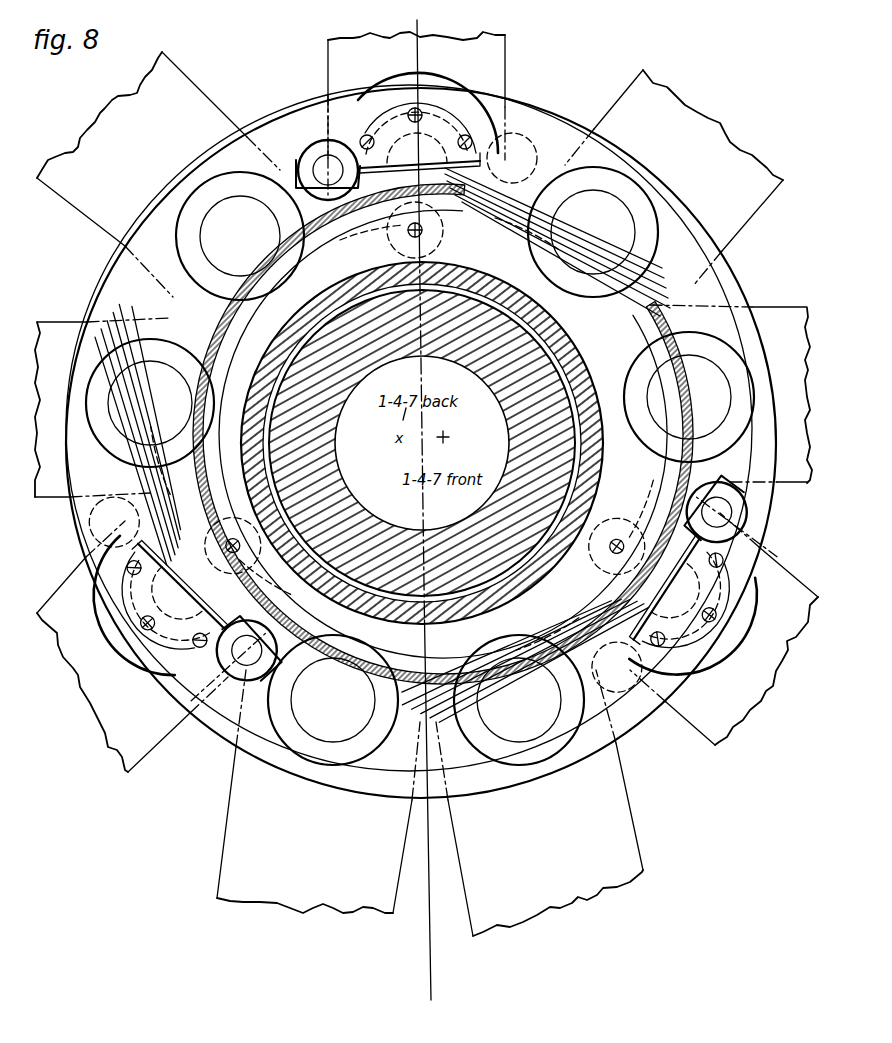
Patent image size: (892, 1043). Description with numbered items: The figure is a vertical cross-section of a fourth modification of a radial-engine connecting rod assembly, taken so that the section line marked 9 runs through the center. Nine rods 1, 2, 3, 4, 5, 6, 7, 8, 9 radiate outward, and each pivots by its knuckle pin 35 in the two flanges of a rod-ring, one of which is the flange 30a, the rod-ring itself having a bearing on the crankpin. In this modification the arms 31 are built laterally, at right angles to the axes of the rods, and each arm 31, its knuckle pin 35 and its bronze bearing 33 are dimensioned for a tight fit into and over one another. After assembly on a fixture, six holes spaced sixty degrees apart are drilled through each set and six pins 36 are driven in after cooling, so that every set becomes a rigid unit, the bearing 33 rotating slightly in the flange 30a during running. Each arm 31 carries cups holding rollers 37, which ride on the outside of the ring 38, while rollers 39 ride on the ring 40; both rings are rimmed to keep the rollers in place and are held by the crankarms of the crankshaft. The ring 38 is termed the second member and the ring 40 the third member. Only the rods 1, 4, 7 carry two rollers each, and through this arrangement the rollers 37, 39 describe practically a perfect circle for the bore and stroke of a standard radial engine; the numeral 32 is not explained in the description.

The rod 1 is at (502, 45).
The rod 2 is at (783, 180).
The rod 3 is at (797, 304).
The rod 4 is at (718, 738).
The rod 5 is at (643, 870).
The rod 6 is at (388, 912).
The rod 7 is at (147, 743).
The rod 8 is at (53, 487).
The rod 9 is at (62, 182).
The flange of rod-ring 30a is at (543, 107).
The arm 31 is at (353, 130).
The crankcase rear flange 32 is at (583, 143).
The bearing 33 is at (387, 227).
The knuckle pin 35 is at (480, 100).
The pin 36 is at (421, 108).
The roller 37 is at (330, 147).
The ring 38 is at (553, 218).
The roller 39 is at (527, 148).
The ring 40 is at (520, 227).